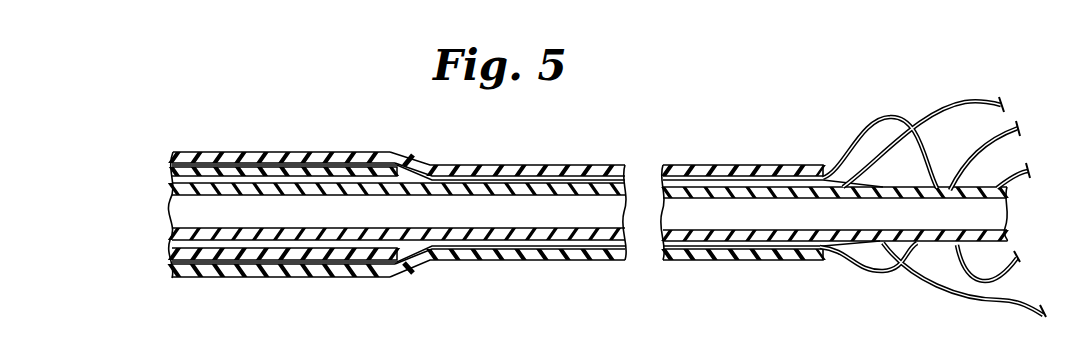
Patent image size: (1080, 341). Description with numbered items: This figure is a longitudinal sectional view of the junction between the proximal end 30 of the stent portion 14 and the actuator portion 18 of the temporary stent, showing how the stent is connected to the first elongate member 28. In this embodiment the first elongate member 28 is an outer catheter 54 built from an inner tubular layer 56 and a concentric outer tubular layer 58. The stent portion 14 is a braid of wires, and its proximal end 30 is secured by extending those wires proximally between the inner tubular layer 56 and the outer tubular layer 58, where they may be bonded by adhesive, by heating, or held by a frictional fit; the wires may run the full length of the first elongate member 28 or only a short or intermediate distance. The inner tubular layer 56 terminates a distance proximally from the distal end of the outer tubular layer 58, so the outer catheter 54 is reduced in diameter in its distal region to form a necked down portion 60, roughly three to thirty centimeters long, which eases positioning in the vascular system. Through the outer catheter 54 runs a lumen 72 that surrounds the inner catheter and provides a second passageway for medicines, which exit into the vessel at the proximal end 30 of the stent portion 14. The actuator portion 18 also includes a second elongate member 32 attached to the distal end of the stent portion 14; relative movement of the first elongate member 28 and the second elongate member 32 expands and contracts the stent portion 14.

The stent portion 14 is at (930, 100).
The actuator portion 18 is at (372, 292).
The first elongate member 28 is at (317, 152).
The proximal end 30 is at (825, 278).
The second elongate member 32 is at (291, 340).
The outer catheter 54 is at (272, 152).
The inner tubular layer 56 is at (187, 152).
The outer tubular layer 58 is at (195, 152).
The necked down portion 60 is at (590, 165).
The lumen 72 is at (725, 180).